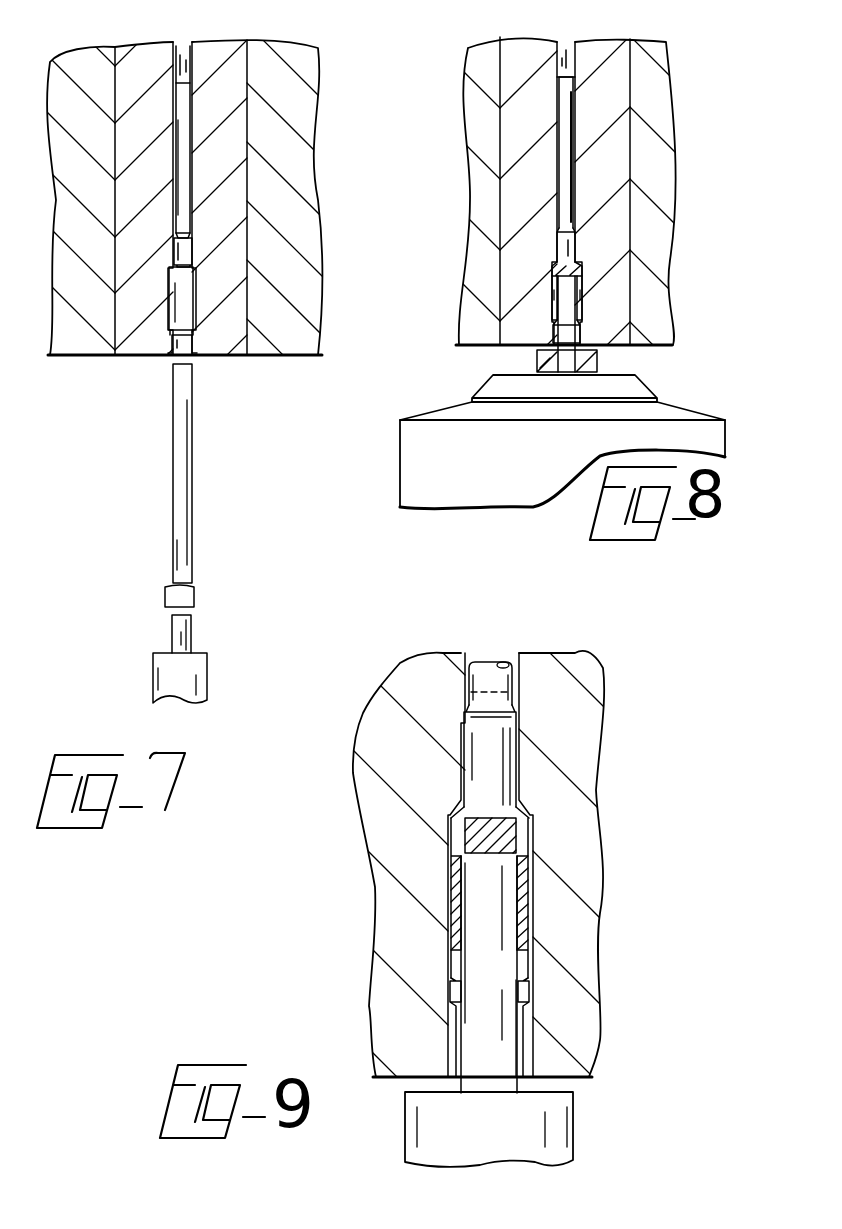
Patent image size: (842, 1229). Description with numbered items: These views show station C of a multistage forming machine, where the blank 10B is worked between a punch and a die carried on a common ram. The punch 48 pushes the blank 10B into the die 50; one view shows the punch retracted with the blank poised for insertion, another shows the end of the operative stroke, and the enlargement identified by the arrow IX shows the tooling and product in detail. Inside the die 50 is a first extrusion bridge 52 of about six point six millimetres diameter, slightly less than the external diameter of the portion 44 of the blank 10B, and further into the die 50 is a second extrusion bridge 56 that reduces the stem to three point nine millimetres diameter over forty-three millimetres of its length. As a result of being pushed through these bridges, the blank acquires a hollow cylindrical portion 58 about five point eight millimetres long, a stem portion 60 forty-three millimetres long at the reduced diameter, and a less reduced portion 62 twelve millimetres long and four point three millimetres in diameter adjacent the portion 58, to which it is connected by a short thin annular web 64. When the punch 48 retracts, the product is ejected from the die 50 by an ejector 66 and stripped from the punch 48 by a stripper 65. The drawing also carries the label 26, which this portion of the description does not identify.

In FIG. 7, the blank 10B is at (204, 463).
In FIG. 7, the shank rod 26 is at (177, 393).
In FIG. 7, the portion of the blank 44 is at (183, 597).
In FIG. 7, the punch 48 is at (177, 630).
In FIG. 9, the punch 48 is at (484, 894).
In FIG. 7, the die 50 is at (220, 87).
In FIG. 8, the die 50 is at (618, 83).
In FIG. 9, the die 50 is at (568, 811).
In FIG. 7, the first extrusion bridge 52 is at (220, 350).
In FIG. 8, the first extrusion bridge 52 is at (581, 323).
In FIG. 9, the first extrusion bridge 52 is at (524, 995).
In FIG. 7, the second extrusion bridge 56 is at (187, 233).
In FIG. 8, the second extrusion bridge 56 is at (560, 240).
In FIG. 9, the second extrusion bridge 56 is at (517, 700).
In FIG. 7, the hollow cylindrical portion 58 is at (181, 298).
In FIG. 8, the hollow cylindrical portion 58 is at (574, 287).
In FIG. 9, the hollow cylindrical portion 58 is at (524, 915).
In FIG. 8, the stem portion 60 is at (565, 123).
In FIG. 9, the stem portion 60 is at (495, 682).
In FIG. 8, the less reduced portion 62 is at (563, 240).
In FIG. 9, the less reduced portion 62 is at (495, 748).
In FIG. 8, the annular web 64 is at (555, 268).
In FIG. 9, the annular web 64 is at (526, 852).
In FIG. 7, the stripper 65 is at (190, 674).
In FIG. 8, the stripper 65 is at (596, 360).
In FIG. 9, the stripper 65 is at (512, 1153).
In FIG. 7, the ejector 66 is at (182, 43).
In FIG. 8, the ejector 66 is at (566, 51).
In FIG. 7, the station C is at (131, 376).
In FIG. 8, the station C is at (511, 354).
In FIG. 8, the arrow IX is at (595, 266).